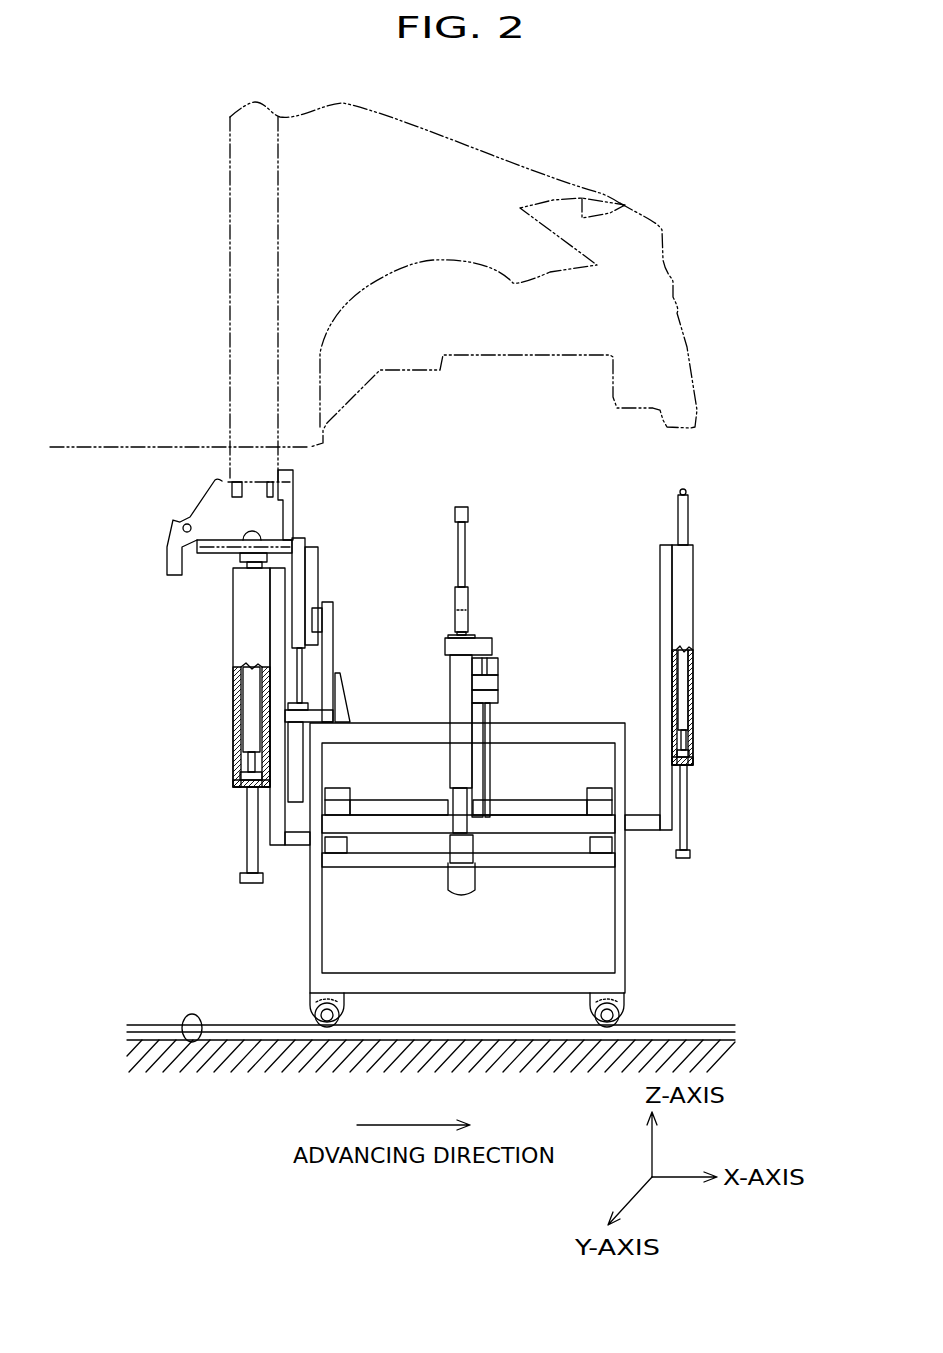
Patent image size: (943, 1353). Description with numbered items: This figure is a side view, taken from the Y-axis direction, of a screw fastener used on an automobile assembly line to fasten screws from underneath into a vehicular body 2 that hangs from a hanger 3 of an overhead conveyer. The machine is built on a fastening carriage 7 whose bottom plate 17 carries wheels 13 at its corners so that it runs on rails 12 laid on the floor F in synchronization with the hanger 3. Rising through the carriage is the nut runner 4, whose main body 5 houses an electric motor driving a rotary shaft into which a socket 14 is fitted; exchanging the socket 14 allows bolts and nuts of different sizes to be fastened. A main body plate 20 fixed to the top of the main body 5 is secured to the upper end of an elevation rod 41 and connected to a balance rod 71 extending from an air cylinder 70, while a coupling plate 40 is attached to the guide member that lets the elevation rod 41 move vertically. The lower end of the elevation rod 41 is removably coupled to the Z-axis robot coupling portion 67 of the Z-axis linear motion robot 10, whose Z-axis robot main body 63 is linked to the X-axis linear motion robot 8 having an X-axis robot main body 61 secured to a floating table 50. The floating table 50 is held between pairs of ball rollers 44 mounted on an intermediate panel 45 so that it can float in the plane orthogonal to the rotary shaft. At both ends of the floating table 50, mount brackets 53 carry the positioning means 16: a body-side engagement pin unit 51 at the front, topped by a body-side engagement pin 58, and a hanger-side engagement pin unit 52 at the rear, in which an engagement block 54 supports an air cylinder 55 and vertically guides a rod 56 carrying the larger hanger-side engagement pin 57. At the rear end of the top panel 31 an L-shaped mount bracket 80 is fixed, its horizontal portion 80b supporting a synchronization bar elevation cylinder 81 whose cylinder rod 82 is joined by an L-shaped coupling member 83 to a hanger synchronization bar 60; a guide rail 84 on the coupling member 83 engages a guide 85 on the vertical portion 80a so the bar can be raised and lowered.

The vehicular body 2 is at (488, 187).
The hanger 3 is at (262, 205).
The nut runner 4 is at (436, 662).
The main body 5 is at (455, 718).
The fastening carriage 7 is at (523, 814).
The X-axis linear motion robot 8 is at (534, 794).
The Z-axis linear motion robot 10 is at (464, 901).
The rails 12 is at (712, 1025).
The wheels 13 is at (320, 1010).
The socket 14 is at (468, 512).
The positioning means 16 is at (198, 632).
The bottom plate 17 is at (615, 985).
The main body plate 20 is at (483, 645).
The top panel 31 is at (612, 735).
The coupling plate 40 is at (497, 682).
The elevation rod 41 is at (458, 820).
The ball rollers 44 is at (340, 805).
The intermediate panel 45 is at (595, 862).
The floating table 50 is at (545, 827).
The body-side engagement pin unit 51 is at (714, 622).
The hanger-side engagement pin unit 52 is at (215, 711).
The mount brackets 53 is at (278, 838).
The engagement block 54 is at (248, 775).
The air cylinder 55 is at (252, 830).
The rod 56 is at (247, 745).
The hanger-side engagement pin 57 is at (260, 538).
The body-side engagement pin 58 is at (684, 490).
The hanger synchronization bar 60 is at (293, 478).
The X-axis robot main body 61 is at (408, 805).
The Z-axis robot main body 63 is at (455, 890).
The Z-axis robot coupling portion 67 is at (465, 855).
The air cylinder 70 is at (487, 752).
The balance rod 71 is at (492, 662).
The mount bracket 80 is at (330, 603).
The vertical portion 80a is at (327, 625).
The horizontal portion 80b is at (320, 713).
The synchronization bar elevation cylinder 81 is at (296, 795).
The cylinder rod 82 is at (298, 652).
The coupling member 83 is at (307, 533).
The guide rail 84 is at (318, 565).
The guide 85 is at (313, 623).
The floor F is at (203, 1038).